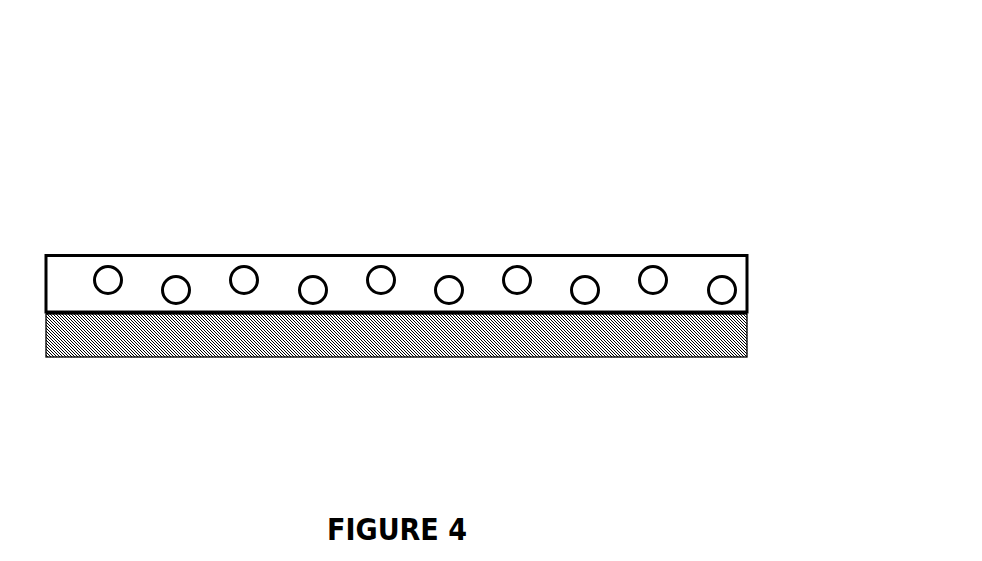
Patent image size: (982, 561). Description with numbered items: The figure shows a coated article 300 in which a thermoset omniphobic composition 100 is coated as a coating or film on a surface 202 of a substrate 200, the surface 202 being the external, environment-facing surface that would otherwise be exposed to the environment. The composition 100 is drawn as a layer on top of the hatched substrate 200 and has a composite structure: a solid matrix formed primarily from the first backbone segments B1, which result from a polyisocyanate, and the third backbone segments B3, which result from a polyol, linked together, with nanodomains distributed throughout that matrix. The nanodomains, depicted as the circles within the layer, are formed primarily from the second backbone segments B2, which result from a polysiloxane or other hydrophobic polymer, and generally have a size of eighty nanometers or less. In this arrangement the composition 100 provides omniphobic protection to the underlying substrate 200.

The coated article 300 is at (572, 121).
The thermoset omniphobic composition 100 is at (132, 255).
The second backbone segments B2 is at (245, 280).
The first backbone segments B1 is at (410, 277).
The third backbone segments B3 is at (462, 226).
The surface of the substrate 202 is at (545, 307).
The substrate 200 is at (268, 357).